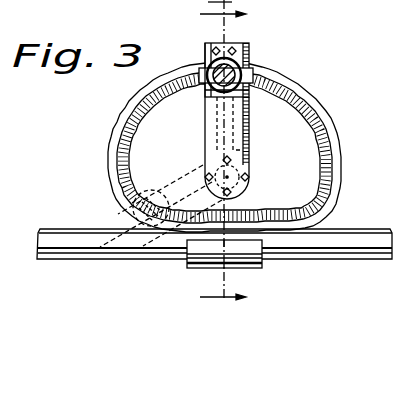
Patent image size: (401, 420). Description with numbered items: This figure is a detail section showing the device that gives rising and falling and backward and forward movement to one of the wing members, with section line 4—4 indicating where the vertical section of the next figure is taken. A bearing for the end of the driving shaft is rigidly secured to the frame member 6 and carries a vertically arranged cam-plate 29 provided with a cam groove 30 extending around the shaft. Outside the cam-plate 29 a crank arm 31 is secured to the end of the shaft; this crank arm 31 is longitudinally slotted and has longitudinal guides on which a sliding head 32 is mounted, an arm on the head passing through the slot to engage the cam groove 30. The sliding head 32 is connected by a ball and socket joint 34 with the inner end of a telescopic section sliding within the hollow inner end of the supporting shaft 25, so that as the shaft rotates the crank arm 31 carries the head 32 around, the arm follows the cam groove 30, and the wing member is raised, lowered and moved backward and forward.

The section line 4— 4 is at (223, 167).
The frame member 6 is at (350, 258).
The supporting shaft 25 is at (250, 64).
The cam-plate 29 is at (224, 147).
The cam groove 30 is at (298, 108).
The crank arm 31 is at (205, 134).
The sliding head 32 is at (205, 94).
The ball and socket joint 34 is at (205, 64).